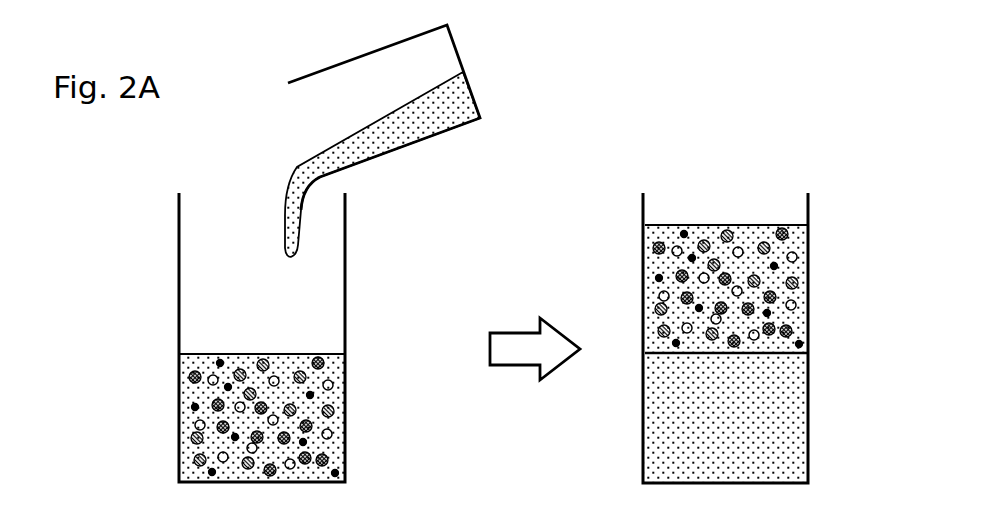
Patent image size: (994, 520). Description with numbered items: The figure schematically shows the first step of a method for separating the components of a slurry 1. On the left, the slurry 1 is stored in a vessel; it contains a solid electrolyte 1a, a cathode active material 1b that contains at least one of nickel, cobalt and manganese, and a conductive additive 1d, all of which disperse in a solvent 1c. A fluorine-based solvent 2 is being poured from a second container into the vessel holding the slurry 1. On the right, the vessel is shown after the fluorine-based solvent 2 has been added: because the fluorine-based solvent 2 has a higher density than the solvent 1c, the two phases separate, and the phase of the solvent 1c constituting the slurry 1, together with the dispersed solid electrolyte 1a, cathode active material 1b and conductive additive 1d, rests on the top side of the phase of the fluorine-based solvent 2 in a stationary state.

The slurry 1 is at (538, 355).
The solid electrolyte 1a is at (334, 385).
The cathode active material 1b is at (334, 411).
The solvent 1c is at (330, 448).
The conductive additive 1d is at (405, 372).
The fluorine-based solvent 2 is at (467, 114).